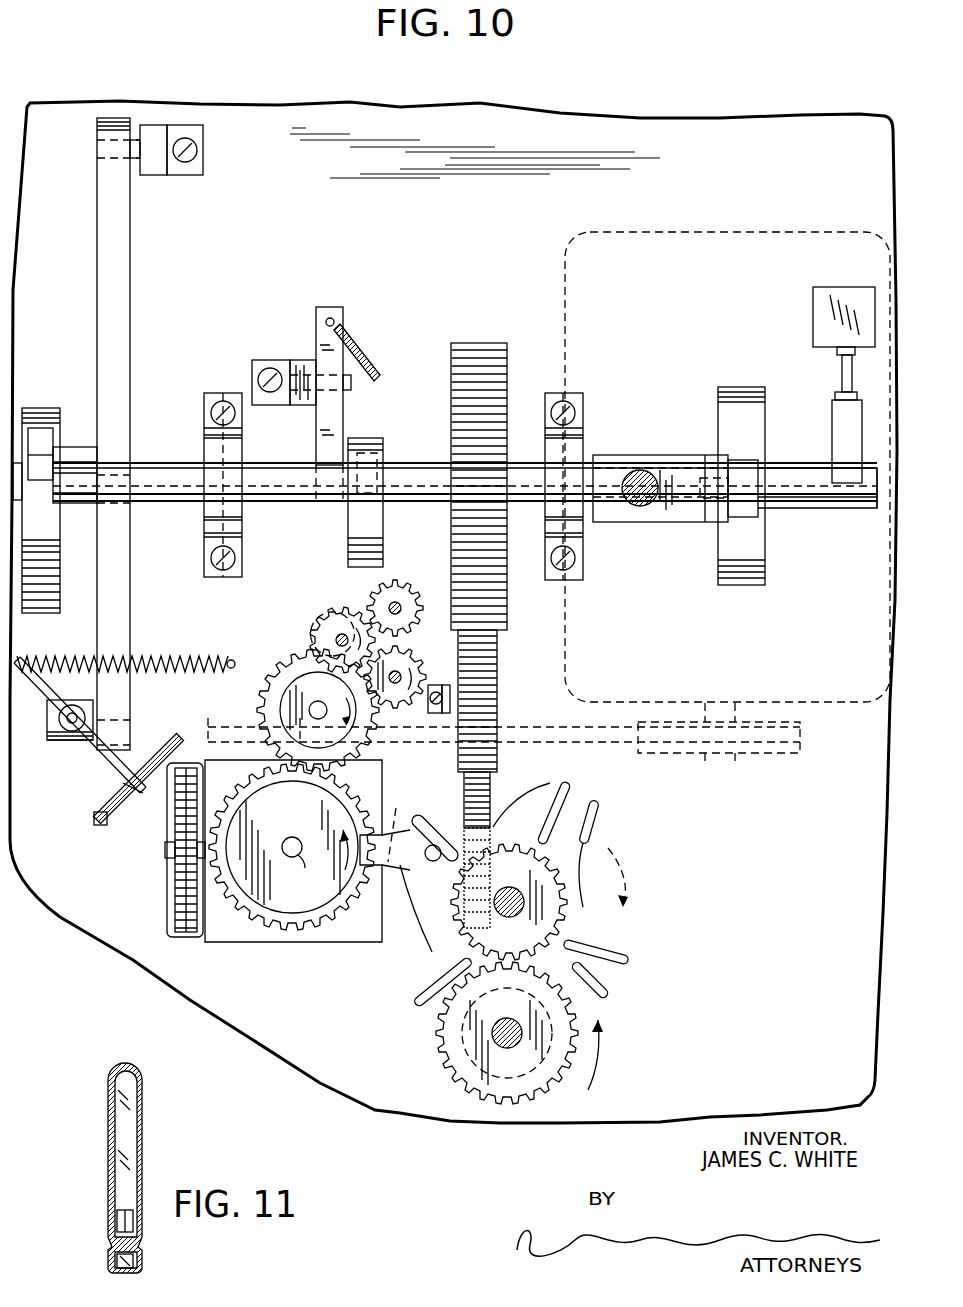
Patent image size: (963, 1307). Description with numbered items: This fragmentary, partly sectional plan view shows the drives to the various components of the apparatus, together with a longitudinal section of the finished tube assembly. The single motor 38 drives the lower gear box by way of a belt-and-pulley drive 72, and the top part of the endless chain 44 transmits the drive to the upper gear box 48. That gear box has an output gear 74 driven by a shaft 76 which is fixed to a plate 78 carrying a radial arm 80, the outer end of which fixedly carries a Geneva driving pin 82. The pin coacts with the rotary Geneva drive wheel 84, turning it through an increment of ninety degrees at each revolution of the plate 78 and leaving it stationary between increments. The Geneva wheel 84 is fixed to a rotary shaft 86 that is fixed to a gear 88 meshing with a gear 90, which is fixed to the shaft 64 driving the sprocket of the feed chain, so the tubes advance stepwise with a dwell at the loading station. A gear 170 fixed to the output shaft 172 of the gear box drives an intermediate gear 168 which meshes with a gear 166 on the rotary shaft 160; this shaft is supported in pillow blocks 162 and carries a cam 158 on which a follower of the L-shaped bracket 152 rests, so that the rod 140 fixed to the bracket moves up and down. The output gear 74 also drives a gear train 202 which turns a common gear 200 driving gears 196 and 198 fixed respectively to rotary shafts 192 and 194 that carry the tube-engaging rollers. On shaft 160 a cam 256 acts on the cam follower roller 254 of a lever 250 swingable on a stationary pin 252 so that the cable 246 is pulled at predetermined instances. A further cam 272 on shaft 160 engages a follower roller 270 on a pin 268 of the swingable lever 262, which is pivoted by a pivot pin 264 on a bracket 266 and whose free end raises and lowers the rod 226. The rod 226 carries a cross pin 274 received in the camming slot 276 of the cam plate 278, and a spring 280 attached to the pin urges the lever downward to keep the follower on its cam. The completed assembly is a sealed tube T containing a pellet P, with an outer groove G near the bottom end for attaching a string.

In FIG. 10, the swingable lever 262 is at (125, 312).
In FIG. 10, the pivot pin 264 is at (170, 175).
In FIG. 10, the bracket 266 is at (203, 162).
In FIG. 10, the follower roller 270 is at (40, 435).
In FIG. 10, the pin 268 is at (78, 447).
In FIG. 10, the rotary cam 272 is at (33, 612).
In FIG. 10, the spring 280 is at (228, 660).
In FIG. 10, the pillow blocks 162 is at (608, 437).
In FIG. 10, the lever 250 is at (336, 411).
In FIG. 10, the cable 246 is at (356, 349).
In FIG. 10, the stationary pin 252 is at (351, 384).
In FIG. 10, the cam follower roller 254 is at (383, 455).
In FIG. 10, the cam 256 is at (372, 505).
In FIG. 10, the gear 166 is at (487, 345).
In FIG. 10, the intermediate gear 168 is at (497, 661).
In FIG. 10, the gear 170 is at (491, 793).
In FIG. 10, the motor 38 is at (602, 237).
In FIG. 10, the L-shaped bracket 152 is at (660, 522).
In FIG. 10, the rod 140 is at (642, 480).
In FIG. 10, the cam 158 is at (765, 565).
In FIG. 10, the rotary shaft 160 is at (797, 503).
In FIG. 10, the gear 198 is at (408, 595).
In FIG. 10, the rotary shaft 194 is at (390, 604).
In FIG. 10, the common gear 200 is at (330, 627).
In FIG. 10, the rotary shaft 192 is at (412, 668).
In FIG. 10, the gear train 202 is at (290, 665).
In FIG. 10, the gear 196 is at (430, 708).
In FIG. 10, the rod 226 is at (52, 742).
In FIG. 10, the camming slot 276 is at (130, 798).
In FIG. 10, the cam plate 278 is at (95, 818).
In FIG. 10, the cross pin 274 is at (143, 773).
In FIG. 10, the upper gear box 48 is at (340, 940).
In FIG. 10, the endless chain 44 is at (183, 940).
In FIG. 10, the output gear 74 is at (297, 935).
In FIG. 10, the shaft 76 is at (292, 847).
In FIG. 10, the plate 78 is at (325, 800).
In FIG. 10, the radial arm 80 is at (392, 880).
In FIG. 10, the output shaft 172 is at (408, 823).
In FIG. 10, the Geneva driving pin 82 is at (435, 845).
In FIG. 10, the belt-and-pulley drive 72 is at (600, 742).
In FIG. 10, the Geneva drive wheel 84 is at (630, 957).
In FIG. 10, the rotary shaft 86 is at (507, 887).
In FIG. 10, the gear 88 is at (505, 918).
In FIG. 10, the gear 90 is at (458, 1070).
In FIG. 10, the shaft 64 is at (512, 1048).
In FIG. 11, the tube T is at (144, 1108).
In FIG. 11, the pellet P is at (135, 1226).
In FIG. 11, the outer groove G is at (138, 1248).